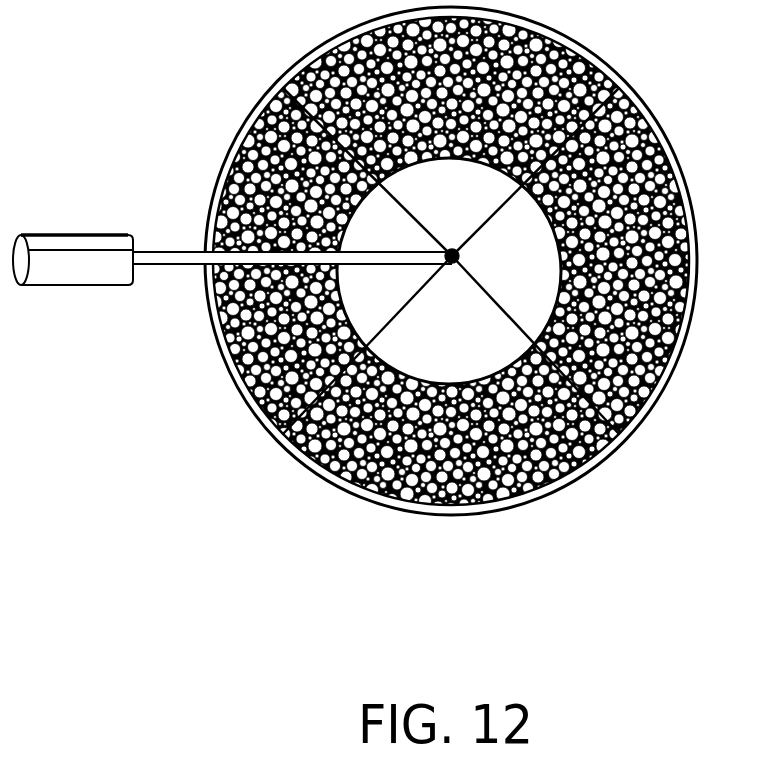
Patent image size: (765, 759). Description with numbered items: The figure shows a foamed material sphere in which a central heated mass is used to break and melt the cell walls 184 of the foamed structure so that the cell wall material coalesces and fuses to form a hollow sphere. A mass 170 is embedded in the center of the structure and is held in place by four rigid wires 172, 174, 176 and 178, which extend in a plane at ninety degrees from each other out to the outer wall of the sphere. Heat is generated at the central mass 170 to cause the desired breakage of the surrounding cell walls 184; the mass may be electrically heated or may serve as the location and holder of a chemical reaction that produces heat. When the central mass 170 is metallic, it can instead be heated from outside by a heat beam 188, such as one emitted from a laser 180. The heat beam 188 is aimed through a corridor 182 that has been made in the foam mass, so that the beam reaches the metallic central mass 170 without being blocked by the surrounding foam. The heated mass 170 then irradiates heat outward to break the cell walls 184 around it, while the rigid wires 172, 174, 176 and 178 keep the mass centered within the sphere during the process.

The mass 170 is at (460, 257).
The rigid wire 172 is at (499, 209).
The rigid wire 174 is at (391, 193).
The rigid wire 176 is at (416, 292).
The rigid wire 178 is at (492, 297).
The laser 180 is at (90, 237).
The corridor 182 is at (233, 270).
The cell walls 184 is at (450, 497).
The heat beam 188 is at (167, 252).